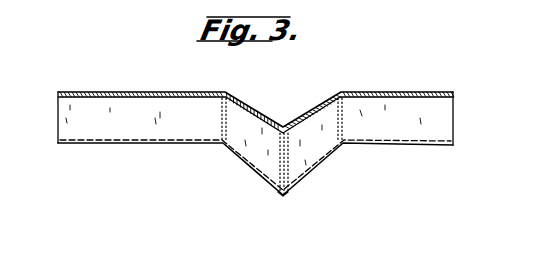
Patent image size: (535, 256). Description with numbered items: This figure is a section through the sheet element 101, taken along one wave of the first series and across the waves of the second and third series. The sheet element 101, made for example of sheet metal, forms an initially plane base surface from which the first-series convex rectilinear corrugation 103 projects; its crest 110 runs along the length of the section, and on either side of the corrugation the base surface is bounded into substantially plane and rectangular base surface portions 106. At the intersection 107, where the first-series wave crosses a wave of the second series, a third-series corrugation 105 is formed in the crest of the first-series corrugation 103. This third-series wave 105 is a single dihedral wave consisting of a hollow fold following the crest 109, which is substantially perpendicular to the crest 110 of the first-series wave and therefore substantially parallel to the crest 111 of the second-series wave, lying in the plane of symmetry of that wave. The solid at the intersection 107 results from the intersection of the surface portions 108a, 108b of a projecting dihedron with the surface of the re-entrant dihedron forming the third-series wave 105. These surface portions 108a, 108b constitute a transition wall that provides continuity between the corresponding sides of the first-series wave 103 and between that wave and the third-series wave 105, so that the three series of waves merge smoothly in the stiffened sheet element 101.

The sheet element 101 is at (97, 140).
The first-series convex rectilinear corrugation 103 is at (160, 118).
The third-series rectilinear corrugation 105 is at (315, 108).
The base surface portion 106 is at (428, 143).
The intersection 107 is at (216, 141).
The surface portion of hollow dihedron 108a is at (316, 142).
The surface portion of hollow dihedron 108b is at (258, 143).
The crest of third-series wave 109 is at (283, 127).
The crest of first-series wave 110 is at (90, 92).
The crest of second-series wave 111 is at (288, 197).